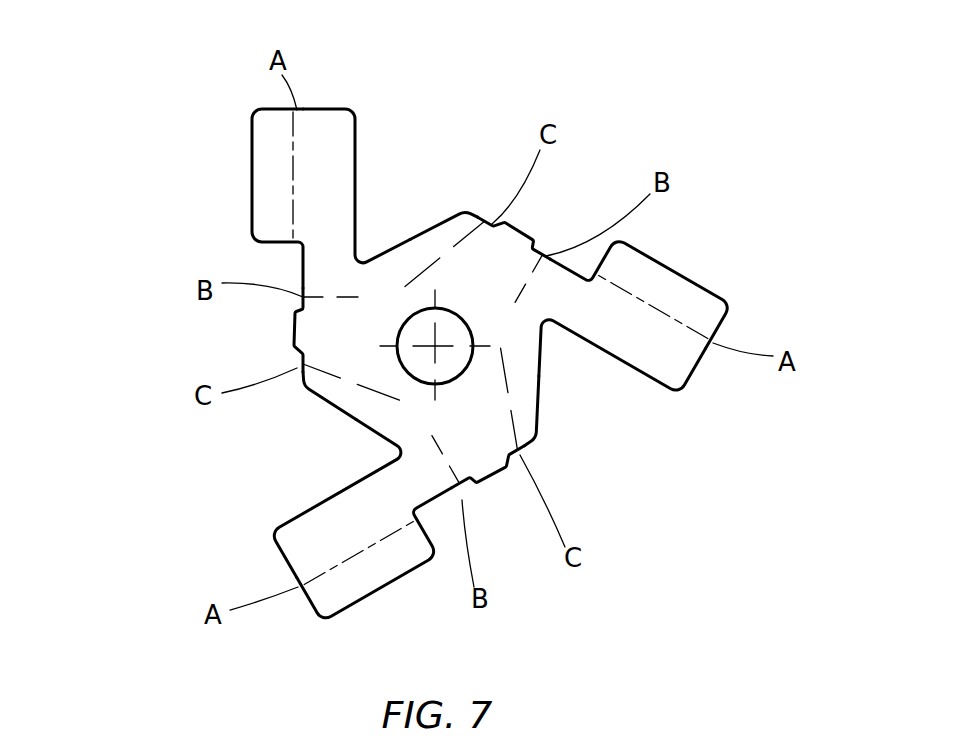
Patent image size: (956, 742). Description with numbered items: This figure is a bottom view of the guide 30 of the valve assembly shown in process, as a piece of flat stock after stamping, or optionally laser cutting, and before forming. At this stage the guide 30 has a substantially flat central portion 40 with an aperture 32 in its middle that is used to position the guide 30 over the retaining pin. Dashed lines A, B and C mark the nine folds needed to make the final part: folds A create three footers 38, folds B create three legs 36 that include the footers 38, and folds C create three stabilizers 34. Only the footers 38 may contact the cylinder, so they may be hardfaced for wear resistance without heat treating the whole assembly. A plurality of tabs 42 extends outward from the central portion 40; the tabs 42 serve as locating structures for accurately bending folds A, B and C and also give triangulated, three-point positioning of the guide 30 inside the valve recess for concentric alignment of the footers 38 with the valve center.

The guide 30 is at (163, 70).
The aperture 32 is at (467, 373).
The stabilizers 34 is at (416, 244).
The legs 36 is at (330, 128).
The footers 38 is at (268, 146).
The central portion 40 is at (364, 309).
The tabs 42 is at (524, 232).